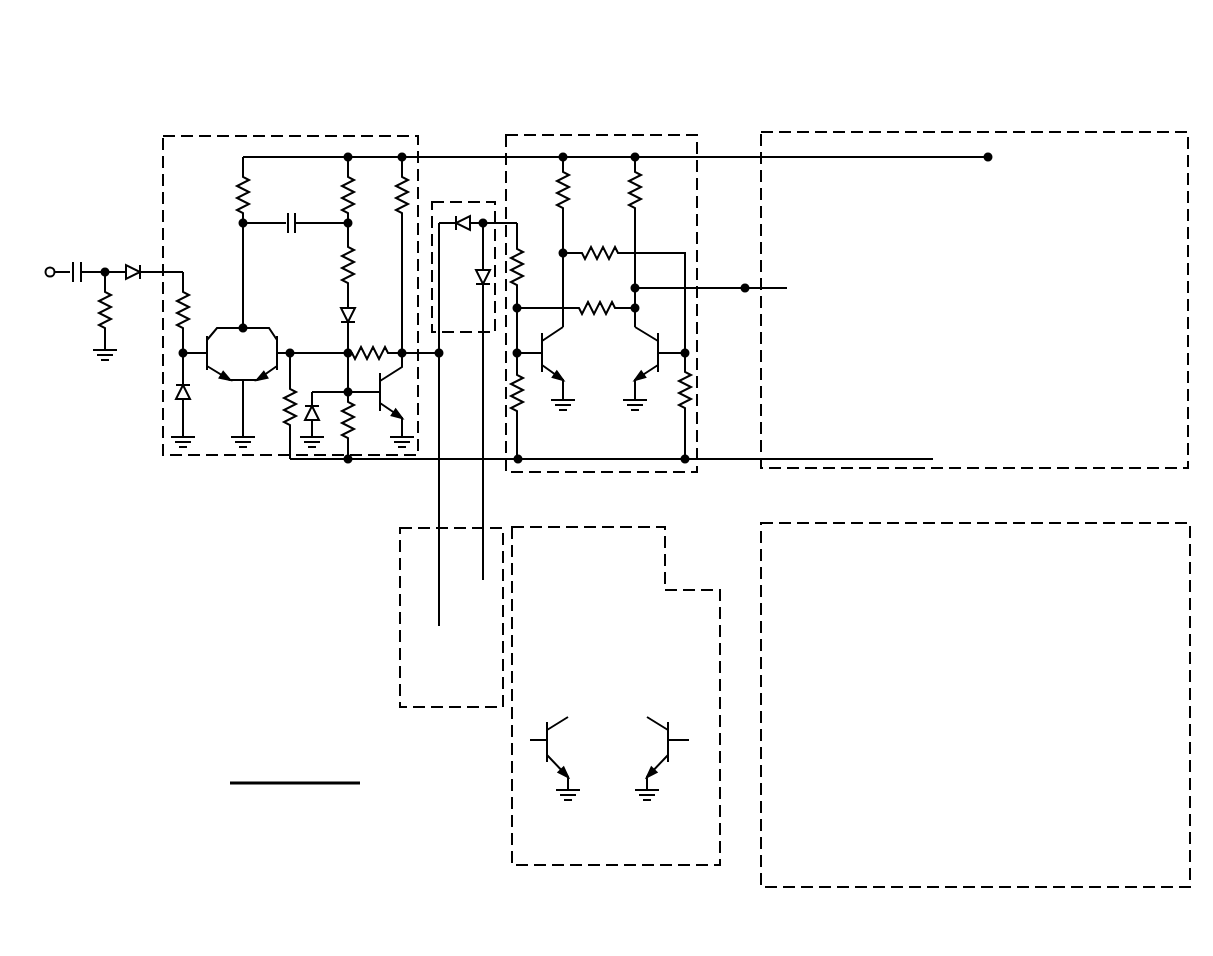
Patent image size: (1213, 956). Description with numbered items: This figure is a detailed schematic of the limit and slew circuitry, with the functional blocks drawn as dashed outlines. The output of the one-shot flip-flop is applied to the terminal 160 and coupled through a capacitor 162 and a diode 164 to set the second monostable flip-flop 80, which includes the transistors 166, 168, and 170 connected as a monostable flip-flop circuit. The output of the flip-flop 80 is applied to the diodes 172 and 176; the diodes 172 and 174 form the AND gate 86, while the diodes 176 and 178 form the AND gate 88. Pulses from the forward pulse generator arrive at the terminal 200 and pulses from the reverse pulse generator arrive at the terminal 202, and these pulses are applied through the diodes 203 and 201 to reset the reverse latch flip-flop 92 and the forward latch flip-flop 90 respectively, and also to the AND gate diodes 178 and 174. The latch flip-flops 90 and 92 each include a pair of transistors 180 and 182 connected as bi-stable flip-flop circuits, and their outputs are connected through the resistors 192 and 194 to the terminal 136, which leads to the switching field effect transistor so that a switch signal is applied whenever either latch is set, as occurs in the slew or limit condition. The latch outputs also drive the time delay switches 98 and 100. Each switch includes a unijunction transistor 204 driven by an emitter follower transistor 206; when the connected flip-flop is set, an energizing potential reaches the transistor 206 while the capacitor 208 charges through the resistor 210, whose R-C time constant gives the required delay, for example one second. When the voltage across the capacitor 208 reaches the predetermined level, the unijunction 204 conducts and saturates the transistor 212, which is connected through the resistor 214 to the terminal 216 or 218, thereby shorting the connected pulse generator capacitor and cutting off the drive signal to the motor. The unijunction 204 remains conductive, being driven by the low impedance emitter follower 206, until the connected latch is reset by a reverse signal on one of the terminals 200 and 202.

The second monostable one-shot flip-flop 80 is at (253, 136).
The AND gate circuit 86 is at (400, 613).
The AND gate circuit 88 is at (482, 202).
The forward latch flip-flop 90 is at (512, 827).
The reverse latch flip-flop 92 is at (543, 135).
The time delay switch 98 is at (1090, 523).
The time delay switch 100 is at (866, 132).
The terminal 136 is at (531, 68).
The terminal 160 is at (49, 267).
The capacitor 162 is at (82, 260).
The diode 164 is at (132, 263).
The transistor 166 is at (209, 336).
The transistor 168 is at (278, 336).
The transistor 170 is at (402, 383).
The diode 172 is at (463, 634).
The diode 174 is at (480, 592).
The diode 176 is at (470, 222).
The diode 178 is at (479, 283).
The transistor 180 is at (546, 338).
The transistor 182 is at (655, 362).
The resistor 192 is at (650, 70).
The resistor 194 is at (650, 108).
The terminal 200 is at (523, 513).
The diode 201 is at (697, 557).
The terminal 202 is at (510, 514).
The diode 203 is at (722, 432).
The unijunction transistor 204 is at (988, 322).
The emitter follower transistor 206 is at (910, 272).
The capacitor 208 is at (862, 328).
The resistor 210 is at (826, 286).
The transistor 212 is at (1092, 339).
The resistor 214 is at (1143, 305).
The terminal 216 is at (1208, 300).
The terminal 218 is at (1210, 672).